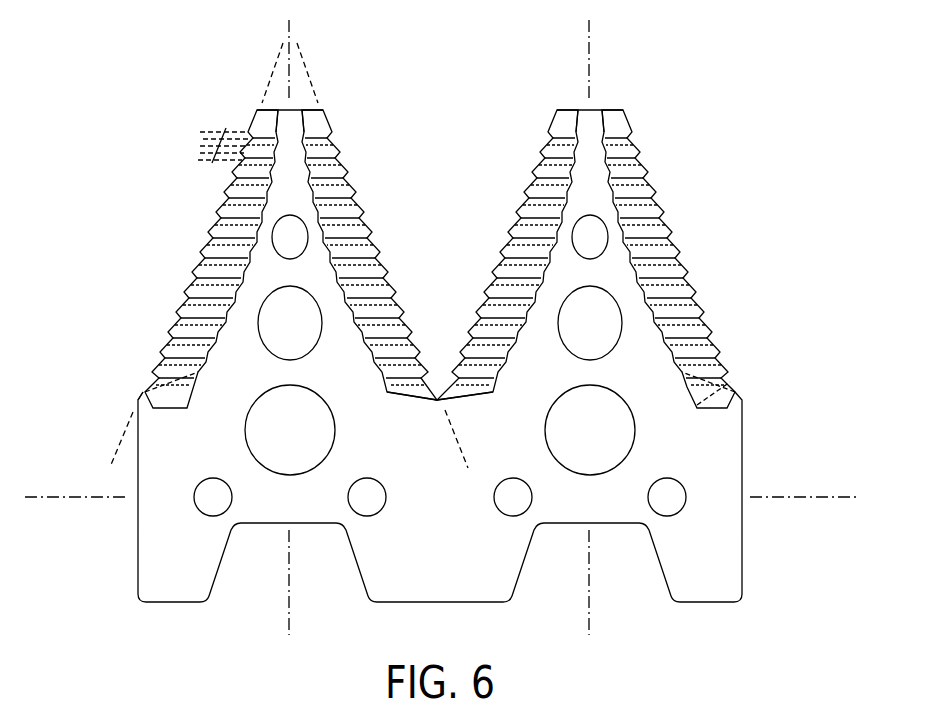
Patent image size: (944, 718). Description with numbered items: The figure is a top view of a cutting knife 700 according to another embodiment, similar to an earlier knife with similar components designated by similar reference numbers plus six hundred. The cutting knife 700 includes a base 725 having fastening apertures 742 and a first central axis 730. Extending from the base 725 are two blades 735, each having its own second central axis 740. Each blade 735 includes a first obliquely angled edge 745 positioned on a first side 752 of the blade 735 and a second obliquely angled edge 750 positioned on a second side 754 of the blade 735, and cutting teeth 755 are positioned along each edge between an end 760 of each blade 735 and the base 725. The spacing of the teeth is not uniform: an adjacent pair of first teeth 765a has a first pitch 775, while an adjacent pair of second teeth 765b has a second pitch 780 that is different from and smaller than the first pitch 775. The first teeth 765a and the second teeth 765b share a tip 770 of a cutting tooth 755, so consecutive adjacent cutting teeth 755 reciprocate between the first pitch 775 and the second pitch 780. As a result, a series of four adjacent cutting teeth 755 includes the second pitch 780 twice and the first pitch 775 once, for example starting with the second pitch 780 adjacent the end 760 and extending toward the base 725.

The cutting knife 700 is at (817, 63).
The base 725 is at (710, 605).
The first central axis 730 is at (806, 497).
The blade 735 is at (297, 152).
The second central axis 740 is at (282, 628).
The fastening apertures 742 is at (196, 510).
The first obliquely angled edge 745 is at (117, 442).
The second obliquely angled edge 750 is at (453, 437).
The first side 752 is at (133, 153).
The second side 754 is at (394, 152).
The cutting teeth 755 is at (402, 236).
The end 760 is at (262, 106).
The first teeth 765a is at (136, 158).
The first pitch 775 is at (210, 148).
The second teeth 765b is at (139, 149).
The second pitch 780 is at (213, 133).
The tip 770 is at (653, 184).